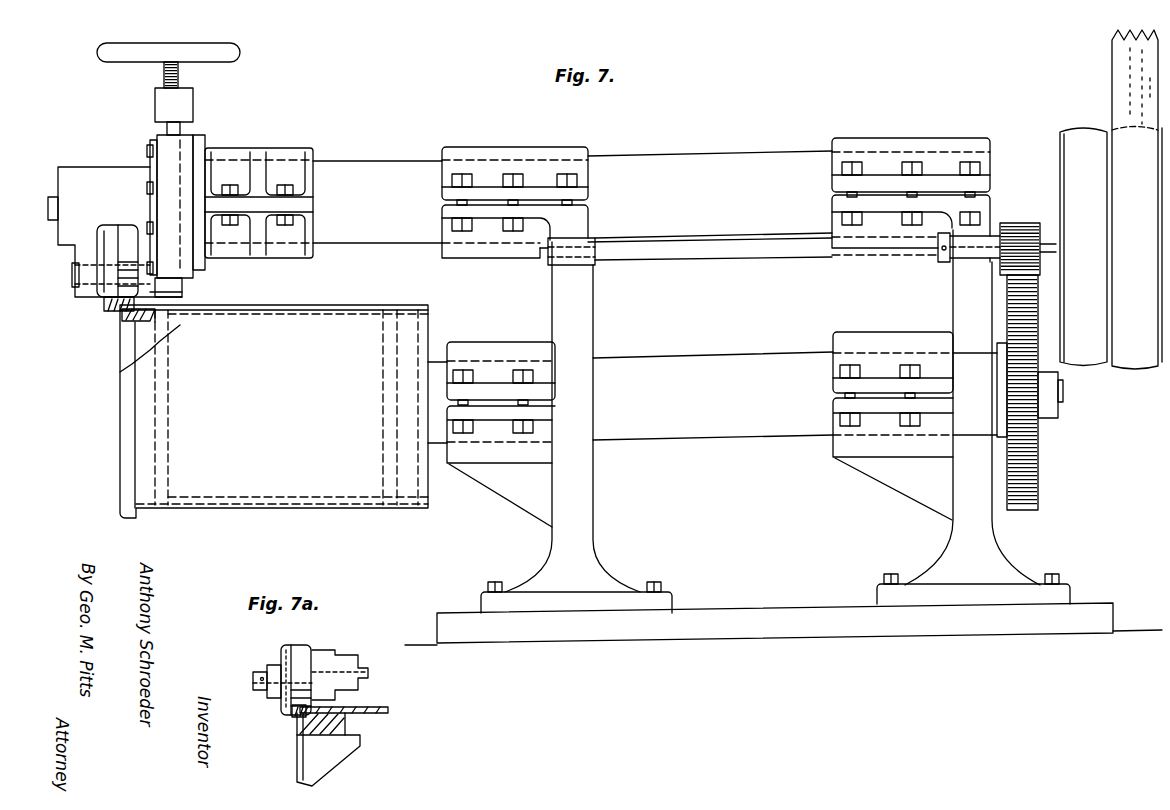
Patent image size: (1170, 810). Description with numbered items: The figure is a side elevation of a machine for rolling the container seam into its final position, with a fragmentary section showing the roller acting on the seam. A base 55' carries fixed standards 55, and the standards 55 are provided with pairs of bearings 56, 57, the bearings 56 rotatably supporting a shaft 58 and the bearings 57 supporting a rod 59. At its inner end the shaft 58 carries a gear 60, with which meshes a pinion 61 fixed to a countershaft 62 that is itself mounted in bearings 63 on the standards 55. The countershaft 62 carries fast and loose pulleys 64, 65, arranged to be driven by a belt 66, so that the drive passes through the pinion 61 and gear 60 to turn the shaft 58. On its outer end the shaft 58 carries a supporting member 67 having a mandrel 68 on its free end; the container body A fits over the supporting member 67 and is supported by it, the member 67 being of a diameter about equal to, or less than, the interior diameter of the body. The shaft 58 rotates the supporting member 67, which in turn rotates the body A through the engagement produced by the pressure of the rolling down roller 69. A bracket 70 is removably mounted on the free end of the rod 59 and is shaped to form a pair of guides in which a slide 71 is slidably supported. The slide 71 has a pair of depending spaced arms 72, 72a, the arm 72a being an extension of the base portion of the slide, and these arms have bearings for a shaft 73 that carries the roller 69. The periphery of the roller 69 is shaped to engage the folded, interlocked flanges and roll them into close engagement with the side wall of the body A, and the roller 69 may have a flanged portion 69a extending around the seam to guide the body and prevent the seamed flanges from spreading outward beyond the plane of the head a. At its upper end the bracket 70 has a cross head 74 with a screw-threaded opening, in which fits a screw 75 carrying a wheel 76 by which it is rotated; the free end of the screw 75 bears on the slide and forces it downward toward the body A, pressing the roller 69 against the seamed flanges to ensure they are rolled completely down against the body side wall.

In FIG. 7, the standards 55 is at (775, 421).
In FIG. 7, the base 55' is at (783, 632).
In FIG. 7, the bearings 56 is at (492, 452).
In FIG. 7, the bearings 57 is at (494, 155).
In FIG. 7, the shaft 58 is at (738, 438).
In FIG. 7, the rod 59 is at (392, 169).
In FIG. 7, the gear 60 is at (1100, 456).
In FIG. 7, the pinion 61 is at (1020, 226).
In FIG. 7, the countershaft 62 is at (699, 258).
In FIG. 7, the bearings 63 is at (585, 256).
In FIG. 7, the fast pulley 64 is at (1083, 247).
In FIG. 7, the loose pulley 65 is at (1112, 128).
In FIG. 7, the belt 66 is at (1123, 62).
In FIG. 7, the supporting member 67 is at (178, 325).
In FIG. 7A, the supporting member 67 is at (356, 736).
In FIG. 7, the mandrel 68 is at (122, 318).
In FIG. 7, the rolling down roller 69 is at (125, 240).
In FIG. 7A, the rolling down roller 69 is at (301, 661).
In FIG. 7, the flanged portion 69a is at (101, 306).
In FIG. 7A, the flanged portion 69a is at (291, 719).
In FIG. 7, the bracket 70 is at (185, 148).
In FIG. 7A, the bracket 70 is at (341, 673).
In FIG. 7, the slide 71 is at (100, 176).
In FIG. 7, the depending arm 72 is at (80, 259).
In FIG. 7A, the depending arm 72 is at (270, 699).
In FIG. 7, the depending arm 72a is at (170, 289).
In FIG. 7, the shaft 73 is at (72, 282).
In FIG. 7A, the shaft 73 is at (254, 686).
In FIG. 7, the cross head 74 is at (157, 101).
In FIG. 7, the screw 75 is at (180, 72).
In FIG. 7, the wheel 76 is at (225, 48).
In FIG. 7, the body A is at (252, 510).
In FIG. 7A, the body A is at (388, 710).
In FIG. 7, the head a is at (120, 372).
In FIG. 7A, the head a is at (298, 761).